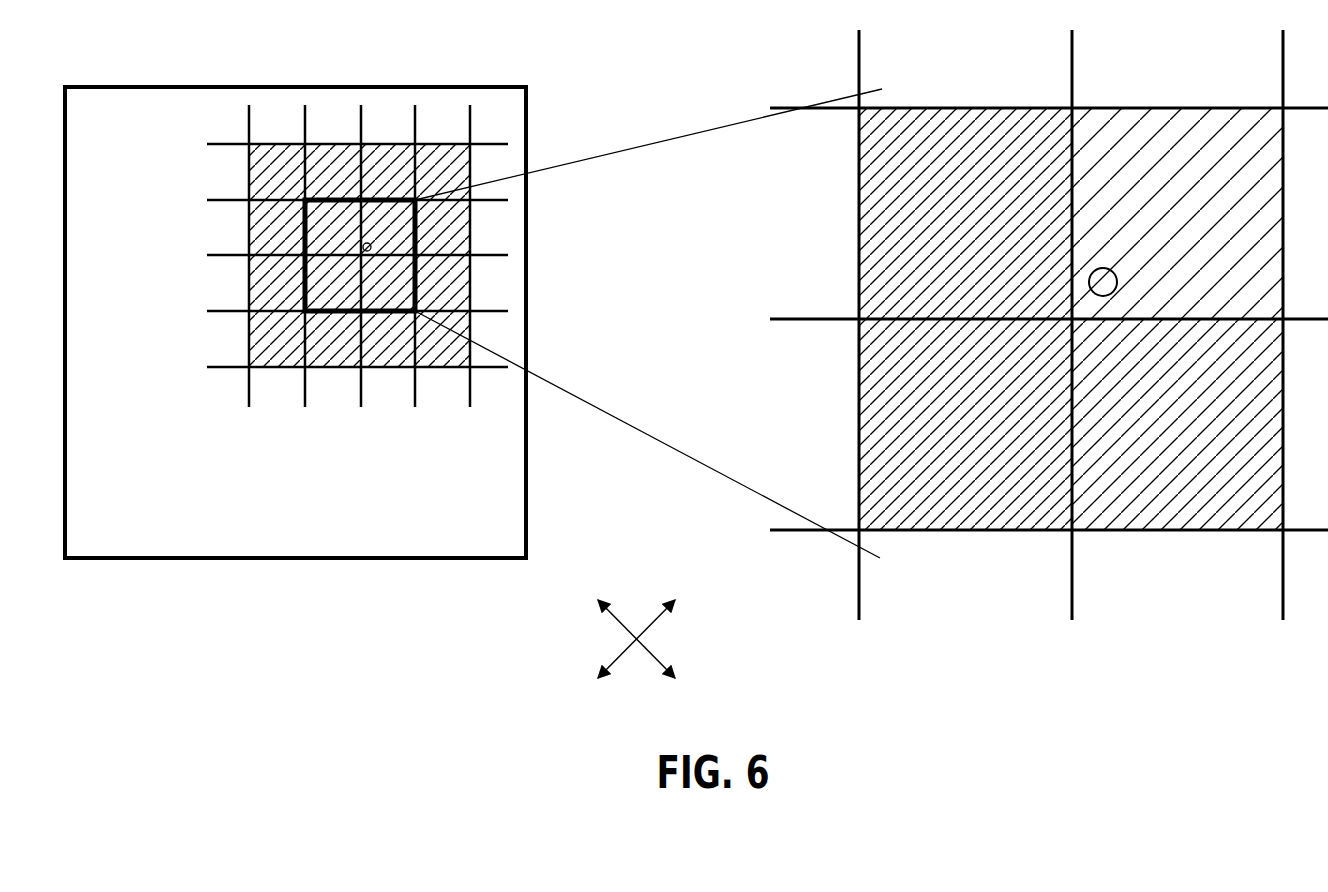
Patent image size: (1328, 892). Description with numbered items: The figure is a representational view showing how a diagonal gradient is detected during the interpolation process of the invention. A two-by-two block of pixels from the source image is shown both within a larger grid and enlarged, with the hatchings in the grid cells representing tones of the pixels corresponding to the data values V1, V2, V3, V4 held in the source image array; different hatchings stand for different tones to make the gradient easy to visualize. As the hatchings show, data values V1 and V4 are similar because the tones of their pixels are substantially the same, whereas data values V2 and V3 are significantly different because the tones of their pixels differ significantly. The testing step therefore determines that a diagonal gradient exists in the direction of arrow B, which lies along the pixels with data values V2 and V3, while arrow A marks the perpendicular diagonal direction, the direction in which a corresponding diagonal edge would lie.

The data value V1 is at (695, 213).
The data value V2 is at (828, 213).
The data value V3 is at (695, 401).
The data value V4 is at (828, 401).
The arrow A is at (629, 626).
The arrow B is at (643, 626).